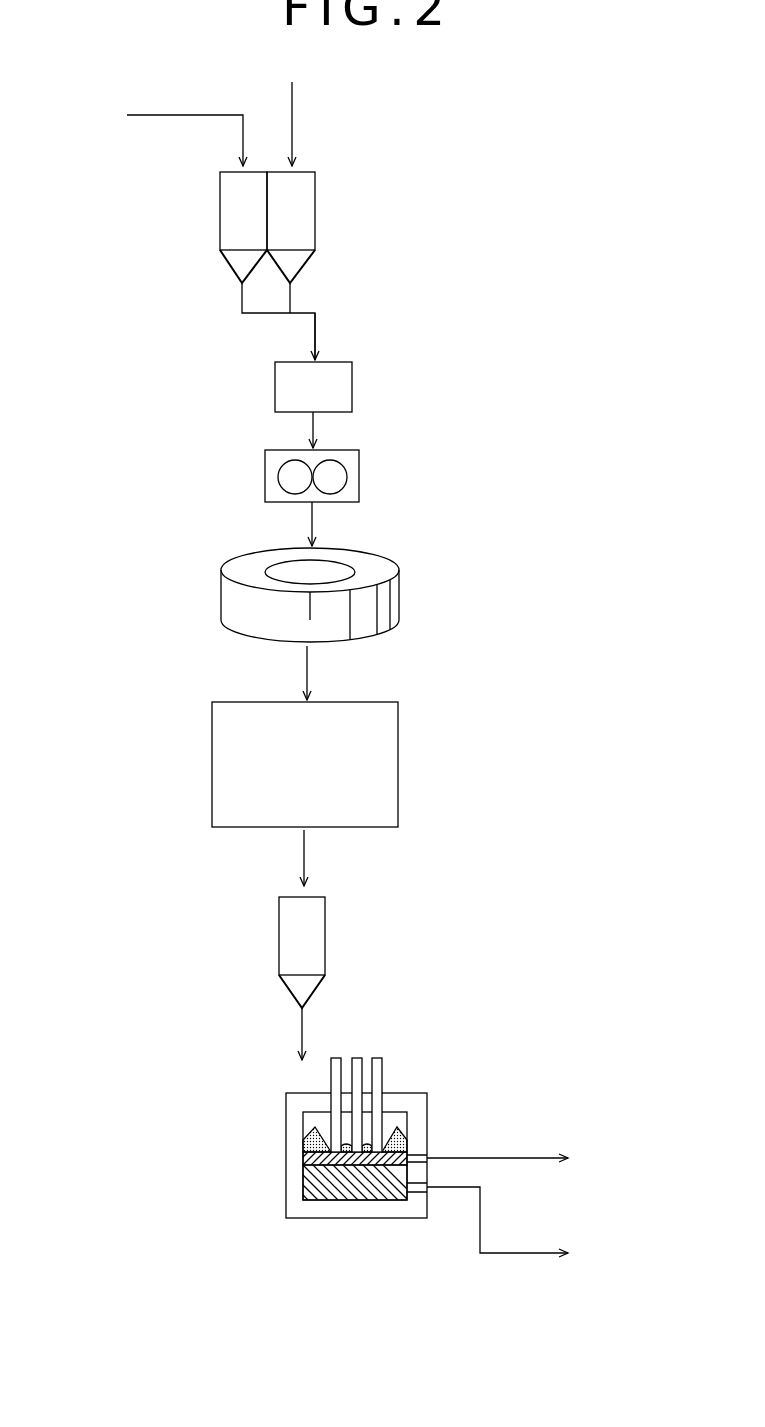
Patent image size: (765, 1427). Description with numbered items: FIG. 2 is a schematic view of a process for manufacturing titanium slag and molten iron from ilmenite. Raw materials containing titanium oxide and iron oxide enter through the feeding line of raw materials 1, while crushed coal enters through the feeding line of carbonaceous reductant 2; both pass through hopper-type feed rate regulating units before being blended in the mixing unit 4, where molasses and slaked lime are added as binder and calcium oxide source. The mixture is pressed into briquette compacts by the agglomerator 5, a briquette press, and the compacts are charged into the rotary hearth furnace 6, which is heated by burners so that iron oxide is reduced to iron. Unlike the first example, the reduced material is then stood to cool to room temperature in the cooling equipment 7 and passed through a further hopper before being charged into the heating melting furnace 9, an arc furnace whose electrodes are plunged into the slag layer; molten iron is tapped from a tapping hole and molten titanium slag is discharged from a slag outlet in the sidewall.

The feeding line of raw materials 1 is at (185, 116).
The feeding line of carbonaceous reductant 2 is at (294, 117).
The mixing unit 4 is at (275, 390).
The agglomerator 5 is at (265, 480).
The rotary hearth furnace 6 is at (221, 600).
The cooling equipment 7 is at (212, 770).
The heating melting furnace 9 is at (286, 1152).